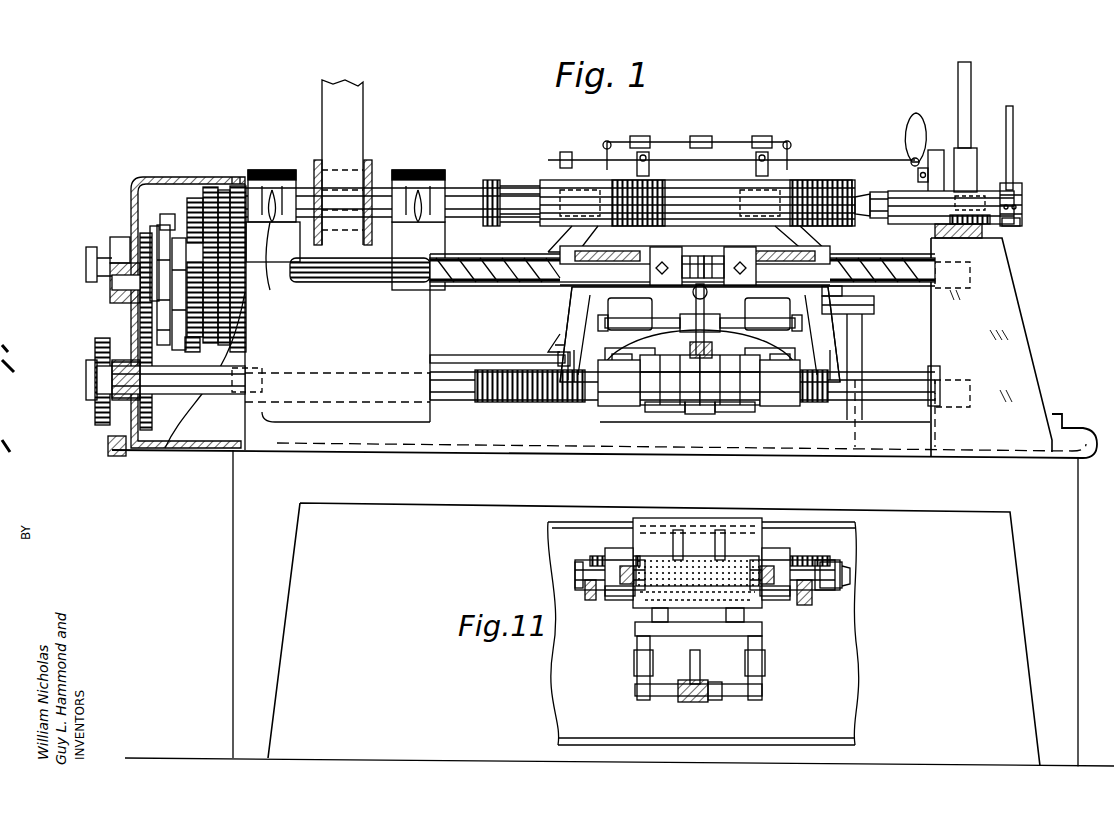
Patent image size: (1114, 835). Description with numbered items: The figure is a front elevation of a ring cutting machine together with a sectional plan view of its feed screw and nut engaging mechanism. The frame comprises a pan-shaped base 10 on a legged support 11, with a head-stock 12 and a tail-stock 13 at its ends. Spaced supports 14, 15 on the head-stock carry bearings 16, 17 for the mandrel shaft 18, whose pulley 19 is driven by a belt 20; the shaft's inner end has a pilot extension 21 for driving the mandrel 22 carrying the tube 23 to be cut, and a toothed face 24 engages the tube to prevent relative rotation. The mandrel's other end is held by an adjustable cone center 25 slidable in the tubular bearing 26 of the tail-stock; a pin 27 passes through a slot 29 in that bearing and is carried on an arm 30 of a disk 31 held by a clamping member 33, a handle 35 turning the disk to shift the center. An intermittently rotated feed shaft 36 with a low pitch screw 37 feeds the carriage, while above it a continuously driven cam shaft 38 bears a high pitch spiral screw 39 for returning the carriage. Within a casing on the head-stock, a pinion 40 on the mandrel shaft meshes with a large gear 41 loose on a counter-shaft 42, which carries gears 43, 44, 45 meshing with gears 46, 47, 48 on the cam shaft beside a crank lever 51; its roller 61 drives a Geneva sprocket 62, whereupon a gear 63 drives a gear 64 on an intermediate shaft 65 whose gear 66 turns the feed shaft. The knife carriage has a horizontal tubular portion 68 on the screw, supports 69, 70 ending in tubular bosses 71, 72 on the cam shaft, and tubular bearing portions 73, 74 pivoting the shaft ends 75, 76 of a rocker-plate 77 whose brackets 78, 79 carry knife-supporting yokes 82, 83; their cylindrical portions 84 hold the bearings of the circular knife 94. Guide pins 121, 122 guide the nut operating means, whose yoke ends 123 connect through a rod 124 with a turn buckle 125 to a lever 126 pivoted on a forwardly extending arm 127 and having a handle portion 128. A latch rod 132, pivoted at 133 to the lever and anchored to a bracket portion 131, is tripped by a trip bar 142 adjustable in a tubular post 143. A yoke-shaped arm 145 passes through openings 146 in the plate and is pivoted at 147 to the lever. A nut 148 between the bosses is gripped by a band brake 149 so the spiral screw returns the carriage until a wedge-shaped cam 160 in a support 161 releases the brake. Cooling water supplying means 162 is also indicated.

In FIG. 1, the pan-shaped base 10 is at (808, 436).
In FIG. 11, the pan-shaped base 10 is at (548, 560).
In FIG. 1, the legged support 11 is at (933, 528).
In FIG. 1, the head-stock 12 is at (337, 338).
In FIG. 1, the tail-stock 13 is at (1022, 340).
In FIG. 1, the support 14 is at (272, 232).
In FIG. 1, the support 15 is at (418, 230).
In FIG. 1, the bearing 16 is at (274, 170).
In FIG. 1, the bearing 17 is at (432, 170).
In FIG. 1, the mandrel shaft 18 is at (378, 190).
In FIG. 1, the pulley 19 is at (370, 162).
In FIG. 1, the belt 20 is at (338, 112).
In FIG. 1, the pilot extension 21 is at (514, 205).
In FIG. 1, the mandrel 22 is at (858, 200).
In FIG. 1, the tube 23 is at (812, 182).
In FIG. 1, the toothed face 24 is at (491, 180).
In FIG. 1, the adjustable cone center 25 is at (875, 218).
In FIG. 1, the tubular bearing 26 is at (918, 222).
In FIG. 1, the pin 27 is at (970, 190).
In FIG. 1, the slot 29 is at (1022, 203).
In FIG. 1, the arm 30 is at (1010, 183).
In FIG. 1, the disk 31 is at (1022, 192).
In FIG. 1, the clamping member 33 is at (1020, 214).
In FIG. 1, the handle 35 is at (1014, 140).
In FIG. 1, the feed shaft 36 is at (460, 400).
In FIG. 11, the feed shaft 36 is at (834, 560).
In FIG. 1, the low pitch screw 37 is at (535, 400).
In FIG. 11, the low pitch screw 37 is at (596, 558).
In FIG. 1, the cam shaft 38 is at (484, 282).
In FIG. 1, the high pitch spiral screw 39 is at (205, 177).
In FIG. 1, the pinion 40 is at (236, 177).
In FIG. 1, the large gear 41 is at (236, 370).
In FIG. 1, the counter-shaft 42 is at (108, 280).
In FIG. 1, the gear 43 is at (232, 325).
In FIG. 1, the gear 44 is at (188, 338).
In FIG. 1, the gear 45 is at (195, 310).
In FIG. 1, the gear 46 is at (222, 210).
In FIG. 1, the gear 47 is at (205, 200).
In FIG. 1, the gear 48 is at (190, 212).
In FIG. 1, the crank lever 51 is at (178, 240).
In FIG. 1, the roller 61 is at (157, 228).
In FIG. 1, the Geneva sprocket 62 is at (162, 220).
In FIG. 1, the gear 63 is at (150, 230).
In FIG. 1, the gear 64 is at (140, 314).
In FIG. 1, the intermediate shaft 65 is at (212, 376).
In FIG. 1, the gear 66 is at (95, 345).
In FIG. 1, the horizontal tubular portion 68 is at (622, 408).
In FIG. 11, the horizontal tubular portion 68 is at (620, 548).
In FIG. 1, the support 69 is at (636, 344).
In FIG. 11, the support 69 is at (632, 566).
In FIG. 1, the support 70 is at (770, 350).
In FIG. 11, the support 70 is at (768, 566).
In FIG. 1, the tubular boss 71 is at (662, 250).
In FIG. 1, the tubular boss 72 is at (742, 250).
In FIG. 1, the tubular bearing portion 73 is at (644, 366).
In FIG. 11, the tubular bearing portion 73 is at (618, 596).
In FIG. 1, the tubular bearing portion 74 is at (756, 370).
In FIG. 11, the tubular bearing portion 74 is at (778, 596).
In FIG. 11, the shaft end 75 is at (578, 588).
In FIG. 11, the shaft end 76 is at (826, 590).
In FIG. 1, the rocker-plate 77 is at (573, 322).
In FIG. 11, the rocker-plate 77 is at (590, 600).
In FIG. 1, the bracket 78 is at (576, 288).
In FIG. 1, the bracket 79 is at (842, 292).
In FIG. 1, the knife-supporting yoke 82 is at (576, 232).
In FIG. 1, the knife-supporting yoke 83 is at (818, 236).
In FIG. 1, the cylindrical portion 84 is at (566, 186).
In FIG. 1, the circular knife 94 is at (612, 186).
In FIG. 1, the guide pin 121 is at (654, 412).
In FIG. 1, the guide pin 122 is at (738, 412).
In FIG. 11, the yoke ends 123 is at (764, 634).
In FIG. 11, the rod 124 is at (762, 648).
In FIG. 11, the turn buckle 125 is at (765, 668).
In FIG. 1, the lever 126 is at (712, 348).
In FIG. 11, the lever 126 is at (690, 702).
In FIG. 1, the forwardly extending arm 127 is at (696, 414).
In FIG. 1, the handle portion 128 is at (708, 292).
In FIG. 11, the bracket portion 131 is at (690, 562).
In FIG. 11, the rod 132 is at (700, 666).
In FIG. 11, the pivot connection 133 is at (716, 700).
In FIG. 1, the trip bar 142 is at (550, 339).
In FIG. 1, the tubular post 143 is at (498, 352).
In FIG. 1, the yoke-shaped arm 145 is at (665, 318).
In FIG. 1, the openings 146 is at (608, 306).
In FIG. 1, the pivot connection 147 is at (720, 322).
In FIG. 1, the nut 148 is at (688, 256).
In FIG. 1, the band brake 149 is at (714, 256).
In FIG. 1, the wedge-shaped cam 160 is at (850, 314).
In FIG. 1, the support 161 is at (862, 362).
In FIG. 1, the cooling water supplying means 162 is at (678, 148).